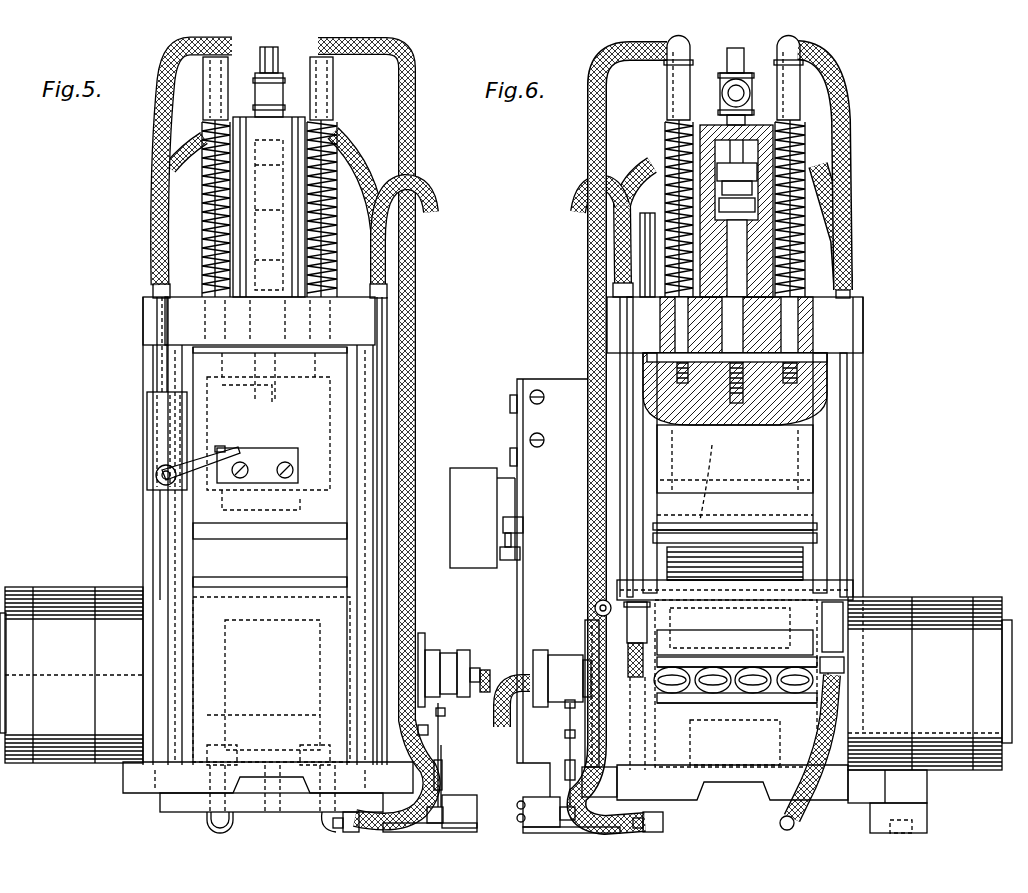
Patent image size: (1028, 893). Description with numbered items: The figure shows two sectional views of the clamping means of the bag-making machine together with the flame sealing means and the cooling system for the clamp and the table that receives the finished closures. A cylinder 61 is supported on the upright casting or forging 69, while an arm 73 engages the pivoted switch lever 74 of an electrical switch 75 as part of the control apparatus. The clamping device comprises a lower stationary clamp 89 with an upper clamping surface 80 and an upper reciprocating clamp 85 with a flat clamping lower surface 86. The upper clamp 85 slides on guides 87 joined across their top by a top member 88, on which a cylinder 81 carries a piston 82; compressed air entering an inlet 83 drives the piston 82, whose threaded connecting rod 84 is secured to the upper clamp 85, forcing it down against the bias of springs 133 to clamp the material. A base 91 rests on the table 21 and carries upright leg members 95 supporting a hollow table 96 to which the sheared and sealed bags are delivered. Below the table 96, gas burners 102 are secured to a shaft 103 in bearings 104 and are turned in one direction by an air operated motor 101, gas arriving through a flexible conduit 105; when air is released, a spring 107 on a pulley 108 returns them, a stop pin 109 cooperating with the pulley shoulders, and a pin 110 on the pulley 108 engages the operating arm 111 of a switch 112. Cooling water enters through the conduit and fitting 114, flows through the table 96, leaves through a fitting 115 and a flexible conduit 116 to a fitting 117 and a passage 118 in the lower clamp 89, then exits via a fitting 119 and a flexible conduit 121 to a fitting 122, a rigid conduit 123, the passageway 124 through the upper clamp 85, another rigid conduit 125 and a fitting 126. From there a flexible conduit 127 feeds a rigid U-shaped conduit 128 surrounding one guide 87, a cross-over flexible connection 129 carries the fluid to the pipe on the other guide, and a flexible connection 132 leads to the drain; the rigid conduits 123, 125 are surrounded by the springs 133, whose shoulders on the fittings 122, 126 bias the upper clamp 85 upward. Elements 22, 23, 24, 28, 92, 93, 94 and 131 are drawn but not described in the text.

In FIG. 6, the table 21 is at (873, 787).
In FIG. 6, the support block 22 is at (915, 810).
In FIG. 5, the rod connection 23 is at (520, 753).
In FIG. 6, the rod connection 23 is at (570, 770).
In FIG. 6, the plate 24 is at (657, 548).
In FIG. 6, the heating element box 28 is at (735, 563).
In FIG. 6, the cylinder 61 is at (640, 290).
In FIG. 6, the upright casting or forging 69 is at (517, 585).
In FIG. 6, the arm 73 is at (522, 522).
In FIG. 6, the pivoted switch lever 74 is at (505, 555).
In FIG. 6, the electrical switch 75 is at (466, 475).
In FIG. 5, the upper clamping surface 80 is at (283, 578).
In FIG. 6, the upper clamping surface 80 is at (735, 572).
In FIG. 5, the cylinder 81 is at (241, 116).
In FIG. 6, the cylinder 81 is at (707, 125).
In FIG. 5, the piston 82 is at (295, 116).
In FIG. 6, the piston 82 is at (757, 150).
In FIG. 5, the inlet 83 is at (260, 60).
In FIG. 6, the inlet 83 is at (745, 62).
In FIG. 5, the threaded connecting rod 84 is at (268, 421).
In FIG. 6, the threaded connecting rod 84 is at (735, 443).
In FIG. 5, the upper reciprocating clamp 85 is at (340, 362).
In FIG. 6, the upper reciprocating clamp 85 is at (764, 445).
In FIG. 5, the flat clamping lower surface 86 is at (318, 540).
In FIG. 6, the flat clamping lower surface 86 is at (803, 540).
In FIG. 5, the guides or slides 87 is at (146, 508).
In FIG. 6, the guides or slides 87 is at (607, 362).
In FIG. 5, the top member 88 is at (143, 315).
In FIG. 6, the top member 88 is at (863, 312).
In FIG. 5, the lower stationary clamp 89 is at (285, 689).
In FIG. 6, the lower stationary clamp 89 is at (763, 755).
In FIG. 5, the base 91 is at (160, 805).
In FIG. 6, the base 91 is at (742, 803).
In FIG. 5, the switch block 92 is at (262, 455).
In FIG. 5, the lever 93 is at (230, 447).
In FIG. 5, the switch housing 94 is at (147, 413).
In FIG. 6, the upright leg members 95 is at (646, 796).
In FIG. 6, the table 96 is at (853, 580).
In FIG. 5, the air operated motor 101 is at (72, 588).
In FIG. 6, the air operated motor 101 is at (945, 598).
In FIG. 6, the gas burners 102 is at (755, 695).
In FIG. 6, the shaft 103 is at (556, 652).
In FIG. 6, the bearings 104 is at (781, 696).
In FIG. 5, the flexible conduit 105 is at (505, 681).
In FIG. 6, the spring 107 is at (596, 603).
In FIG. 5, the pulley 108 is at (420, 645).
In FIG. 6, the pulley 108 is at (585, 625).
In FIG. 5, the stop pin 109 is at (430, 732).
In FIG. 6, the stop pin 109 is at (570, 734).
In FIG. 5, the pin 110 is at (445, 712).
In FIG. 6, the pin 110 is at (565, 710).
In FIG. 5, the operating arm 111 is at (441, 752).
In FIG. 6, the operating arm 111 is at (570, 745).
In FIG. 5, the switch 112 is at (430, 813).
In FIG. 6, the switch 112 is at (568, 815).
In FIG. 6, the flexible conduit and fitting 114 is at (645, 640).
In FIG. 6, the fitting 115 is at (844, 640).
In FIG. 6, the flexible conduit 116 is at (800, 818).
In FIG. 5, the fitting 117 is at (233, 820).
In FIG. 6, the fitting 117 is at (780, 824).
In FIG. 5, the passage 118 is at (268, 737).
In FIG. 6, the passage 118 is at (790, 642).
In FIG. 5, the fitting 119 is at (325, 820).
In FIG. 6, the fitting 119 is at (668, 824).
In FIG. 5, the flexible conduit 121 is at (418, 100).
In FIG. 6, the flexible conduit 121 is at (587, 557).
In FIG. 5, the fitting 122 is at (335, 62).
In FIG. 6, the fitting 122 is at (690, 50).
In FIG. 5, the rigid conduit 123 is at (334, 235).
In FIG. 6, the rigid conduit 123 is at (665, 152).
In FIG. 5, the passageway 124 is at (261, 447).
In FIG. 6, the passageway 124 is at (735, 426).
In FIG. 5, the rigid conduit 125 is at (205, 222).
In FIG. 6, the rigid conduit 125 is at (800, 222).
In FIG. 5, the fitting 126 is at (185, 44).
In FIG. 6, the fitting 126 is at (805, 43).
In FIG. 5, the flexible conduit 127 is at (152, 240).
In FIG. 6, the flexible conduit 127 is at (853, 127).
In FIG. 5, the rigid U-shaped conduit 128 is at (158, 362).
In FIG. 6, the rigid U-shaped conduit 128 is at (847, 383).
In FIG. 5, the cross-over flexible connection 129 is at (160, 160).
In FIG. 6, the cross-over flexible connection 129 is at (615, 262).
In FIG. 5, the pipe 131 is at (388, 379).
In FIG. 6, the pipe 131 is at (627, 405).
In FIG. 5, the flexible connection 132 is at (432, 192).
In FIG. 6, the flexible connection 132 is at (575, 200).
In FIG. 5, the springs 133 is at (210, 255).
In FIG. 6, the springs 133 is at (667, 126).